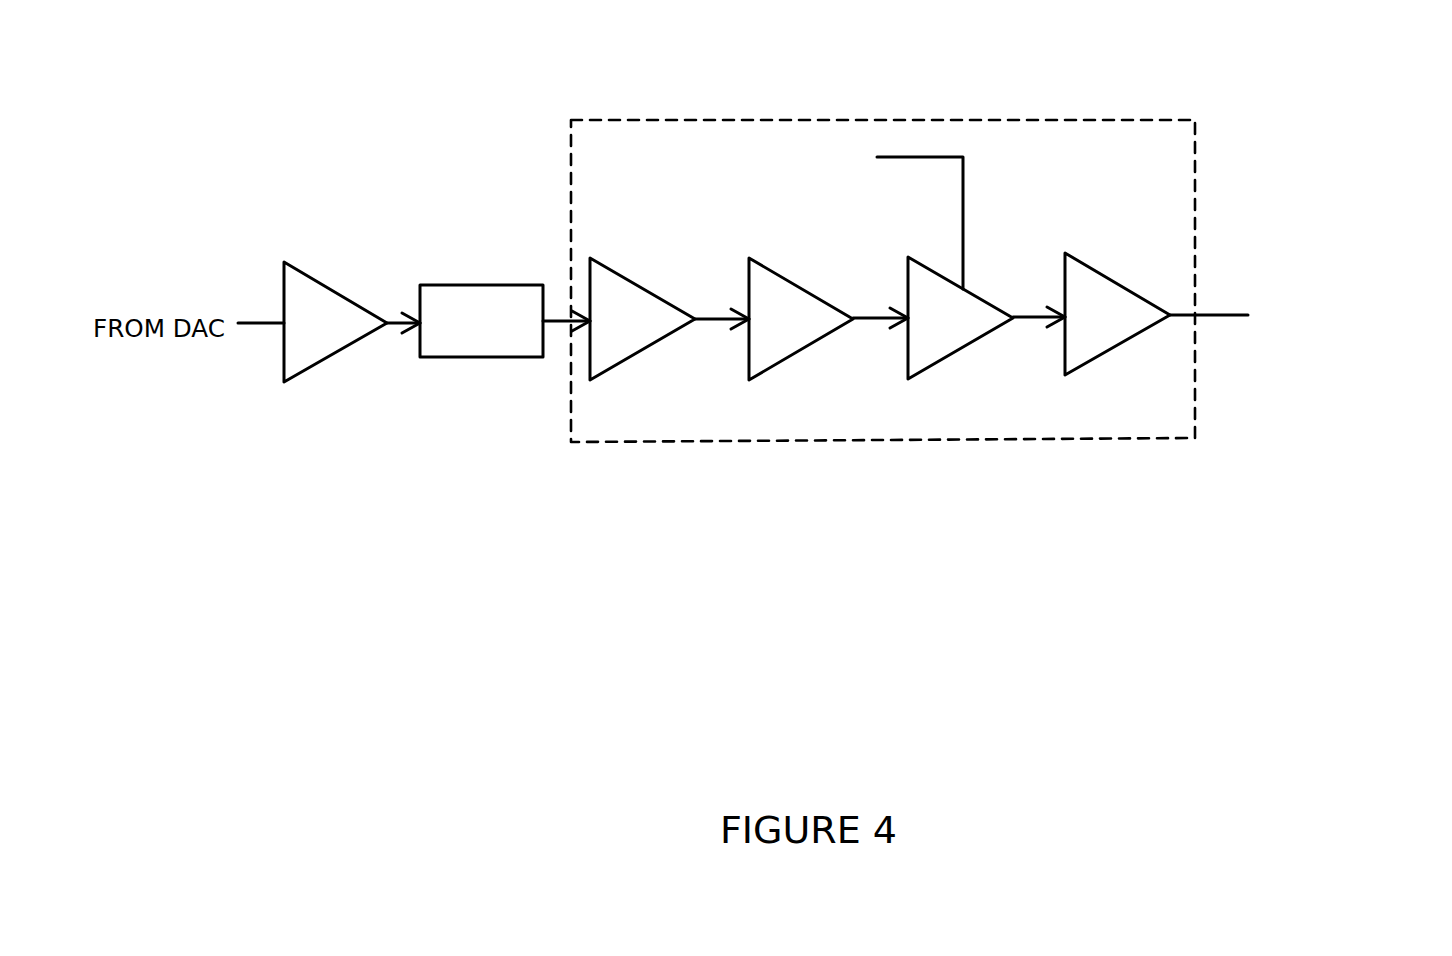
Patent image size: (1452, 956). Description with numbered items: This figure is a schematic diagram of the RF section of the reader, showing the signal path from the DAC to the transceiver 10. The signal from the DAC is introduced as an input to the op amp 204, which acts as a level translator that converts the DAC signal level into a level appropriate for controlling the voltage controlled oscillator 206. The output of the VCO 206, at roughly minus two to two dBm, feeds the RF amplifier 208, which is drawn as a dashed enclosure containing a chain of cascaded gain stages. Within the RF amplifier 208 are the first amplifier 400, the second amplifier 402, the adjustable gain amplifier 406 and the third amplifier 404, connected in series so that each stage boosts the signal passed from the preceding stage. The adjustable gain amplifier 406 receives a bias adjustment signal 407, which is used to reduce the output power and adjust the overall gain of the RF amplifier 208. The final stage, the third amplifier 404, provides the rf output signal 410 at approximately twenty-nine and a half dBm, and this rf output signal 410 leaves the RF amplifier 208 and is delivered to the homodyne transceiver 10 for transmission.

The transceiver 10 is at (1350, 339).
The op amp 204 is at (311, 275).
The voltage controlled oscillator 206 is at (456, 285).
The RF amplifier 208 is at (772, 82).
The first amplifier 400 is at (669, 322).
The second amplifier 402 is at (828, 322).
The third amplifier 404 is at (1117, 318).
The adjustable gain amplifier 406 is at (986, 321).
The bias adjustment signal 407 is at (855, 217).
The rf output signal 410 is at (1209, 298).